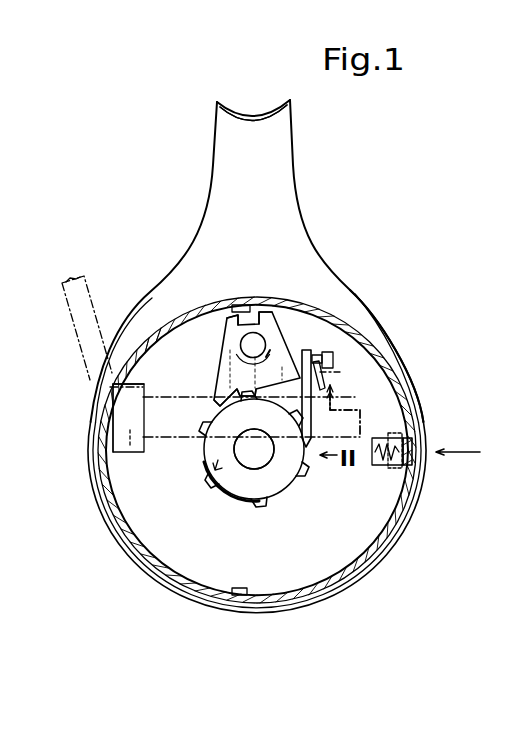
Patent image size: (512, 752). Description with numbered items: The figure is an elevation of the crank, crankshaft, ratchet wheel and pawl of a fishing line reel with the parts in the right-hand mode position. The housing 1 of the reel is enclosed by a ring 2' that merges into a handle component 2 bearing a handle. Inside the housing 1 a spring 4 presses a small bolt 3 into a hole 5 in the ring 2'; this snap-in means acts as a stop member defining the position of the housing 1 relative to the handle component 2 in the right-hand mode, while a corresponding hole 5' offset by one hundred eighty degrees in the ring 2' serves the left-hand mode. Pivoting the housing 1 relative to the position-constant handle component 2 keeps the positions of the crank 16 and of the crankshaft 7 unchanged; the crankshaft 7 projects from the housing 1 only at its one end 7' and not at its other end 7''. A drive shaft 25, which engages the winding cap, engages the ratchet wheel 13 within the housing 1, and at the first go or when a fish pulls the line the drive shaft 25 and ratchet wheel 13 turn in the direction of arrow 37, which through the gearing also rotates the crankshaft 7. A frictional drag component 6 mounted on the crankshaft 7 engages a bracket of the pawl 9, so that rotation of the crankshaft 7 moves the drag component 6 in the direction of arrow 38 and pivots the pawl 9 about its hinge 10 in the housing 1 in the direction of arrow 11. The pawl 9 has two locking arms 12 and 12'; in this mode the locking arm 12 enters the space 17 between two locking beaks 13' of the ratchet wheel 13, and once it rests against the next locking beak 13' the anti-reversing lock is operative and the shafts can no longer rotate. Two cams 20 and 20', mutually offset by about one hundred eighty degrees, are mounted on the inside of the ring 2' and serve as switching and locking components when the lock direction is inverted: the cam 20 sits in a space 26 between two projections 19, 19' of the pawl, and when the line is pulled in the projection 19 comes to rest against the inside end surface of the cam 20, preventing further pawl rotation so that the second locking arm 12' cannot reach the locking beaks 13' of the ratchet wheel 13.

The housing 1 is at (338, 547).
The handle component 2 is at (257, 240).
The ring 2' is at (269, 450).
The small bolt 3 is at (410, 463).
The spring 4 is at (374, 462).
The hole 5 is at (423, 439).
The hole 5' is at (96, 431).
The frictional drag component 6 is at (323, 348).
The crankshaft 7 is at (130, 476).
The end of crankshaft 7' is at (99, 462).
The other end of crankshaft 7'' is at (409, 377).
The pawl 9 is at (290, 347).
The hinge 10 is at (303, 275).
The arrow 11 is at (222, 351).
The locking arm 12 is at (217, 373).
The second locking arm 12' is at (378, 384).
The ratchet wheel 13 is at (254, 480).
The locking beaks 13' is at (235, 462).
The crank 16 is at (82, 292).
The space 17 is at (200, 412).
The projection 19 is at (219, 294).
The projection 19' is at (273, 283).
The cam 20 is at (234, 271).
The cam 20' is at (225, 631).
The drive shaft 25 is at (263, 460).
The space 26 is at (253, 300).
The arrow 37 is at (256, 487).
The arrow 38 is at (368, 408).